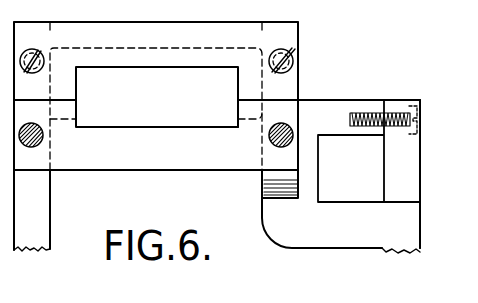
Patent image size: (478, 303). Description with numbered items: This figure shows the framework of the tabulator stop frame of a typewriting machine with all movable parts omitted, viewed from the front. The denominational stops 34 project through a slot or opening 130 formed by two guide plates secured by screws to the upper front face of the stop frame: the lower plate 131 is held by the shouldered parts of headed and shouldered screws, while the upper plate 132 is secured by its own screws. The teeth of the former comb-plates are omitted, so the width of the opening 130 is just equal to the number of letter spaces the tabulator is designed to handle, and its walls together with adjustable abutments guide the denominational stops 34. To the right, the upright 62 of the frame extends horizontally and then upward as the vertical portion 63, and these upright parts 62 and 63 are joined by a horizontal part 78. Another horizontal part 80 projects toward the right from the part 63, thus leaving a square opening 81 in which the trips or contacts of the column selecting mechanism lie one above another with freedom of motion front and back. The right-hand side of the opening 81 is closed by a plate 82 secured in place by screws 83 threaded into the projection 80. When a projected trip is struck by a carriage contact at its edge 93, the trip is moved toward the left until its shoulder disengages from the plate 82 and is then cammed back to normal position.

The denominational stop 34 is at (125, 11).
The upright 62 is at (426, 239).
The vertical portion 63 is at (261, 193).
The horizontal part 78 is at (320, 241).
The horizontal part 80 is at (333, 99).
The square opening 81 is at (369, 151).
The plate 82 is at (425, 147).
The screws 83 is at (391, 111).
The edge 93 is at (385, 51).
The slot or opening 130 is at (157, 97).
The lower guide plate 131 is at (195, 129).
The upper guide plate 132 is at (156, 98).